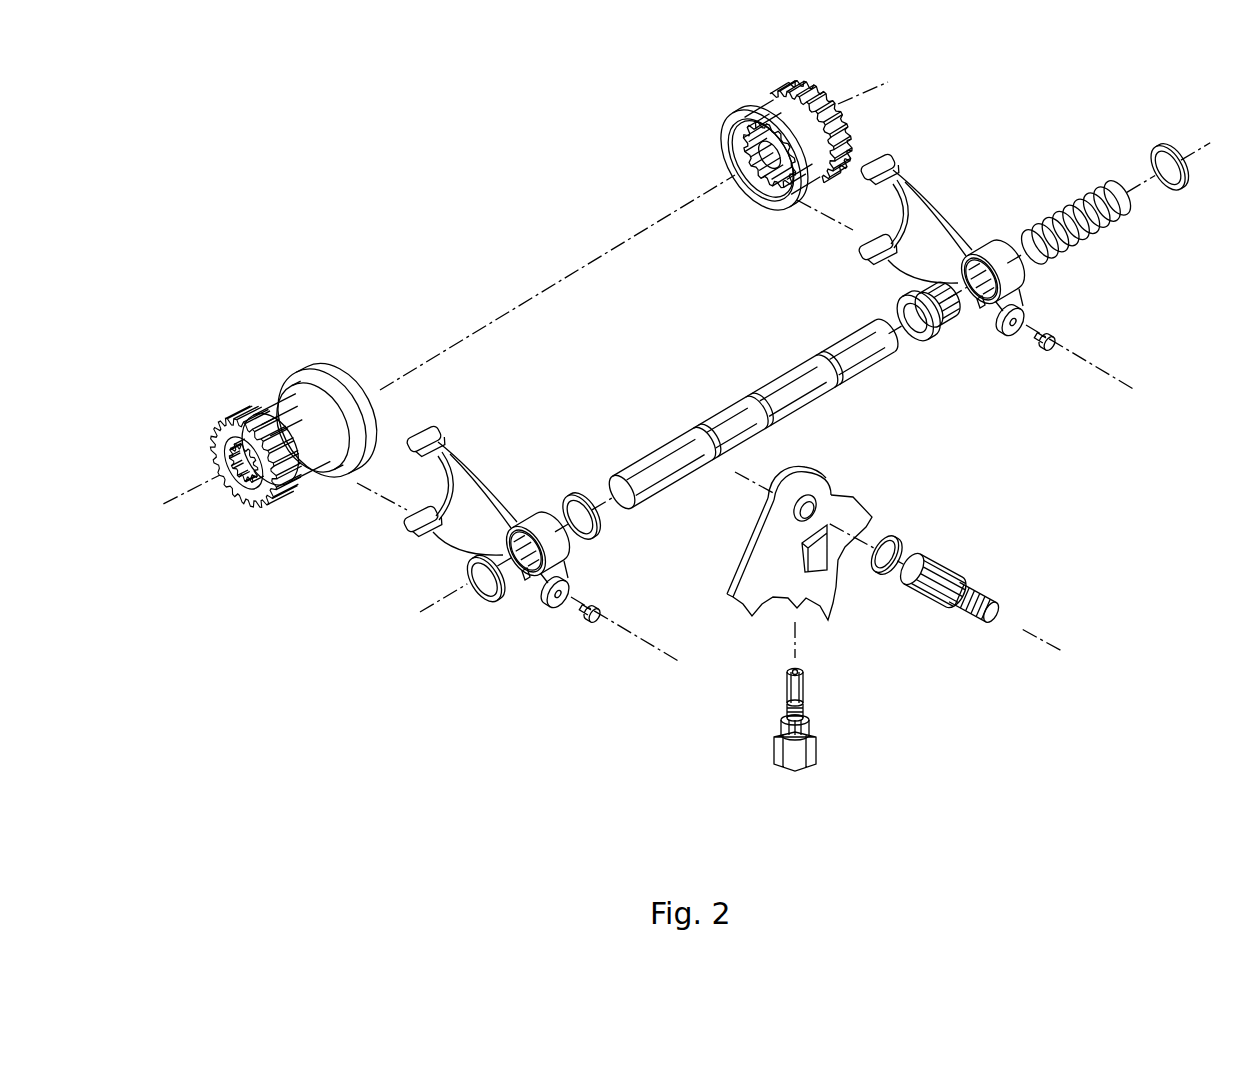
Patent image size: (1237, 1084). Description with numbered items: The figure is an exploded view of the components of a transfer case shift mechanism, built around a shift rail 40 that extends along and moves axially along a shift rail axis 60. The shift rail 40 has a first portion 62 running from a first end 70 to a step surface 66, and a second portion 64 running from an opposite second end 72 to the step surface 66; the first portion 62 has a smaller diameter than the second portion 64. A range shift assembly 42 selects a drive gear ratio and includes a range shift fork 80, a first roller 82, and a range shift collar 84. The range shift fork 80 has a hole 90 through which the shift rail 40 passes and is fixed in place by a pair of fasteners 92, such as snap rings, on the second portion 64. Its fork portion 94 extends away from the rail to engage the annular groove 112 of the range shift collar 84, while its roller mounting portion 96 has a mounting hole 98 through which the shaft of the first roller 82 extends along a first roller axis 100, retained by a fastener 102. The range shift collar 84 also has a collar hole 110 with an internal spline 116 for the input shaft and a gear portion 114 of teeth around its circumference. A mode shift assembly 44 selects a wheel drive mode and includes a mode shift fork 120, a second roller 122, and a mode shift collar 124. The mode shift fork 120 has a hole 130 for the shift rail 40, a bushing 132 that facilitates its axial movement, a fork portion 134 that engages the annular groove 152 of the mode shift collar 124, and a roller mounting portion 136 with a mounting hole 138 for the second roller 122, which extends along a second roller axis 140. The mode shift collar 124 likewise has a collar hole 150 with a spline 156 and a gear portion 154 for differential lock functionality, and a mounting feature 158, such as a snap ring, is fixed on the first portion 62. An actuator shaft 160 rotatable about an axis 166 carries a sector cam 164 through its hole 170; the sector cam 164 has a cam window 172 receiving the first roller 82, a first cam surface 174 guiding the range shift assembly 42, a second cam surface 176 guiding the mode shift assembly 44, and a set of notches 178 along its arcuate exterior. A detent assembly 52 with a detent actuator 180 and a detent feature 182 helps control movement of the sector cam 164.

The shift rail 40 is at (753, 441).
The range shift assembly 42 is at (269, 439).
The mode shift assembly 44 is at (758, 155).
The detent assembly 52 is at (806, 754).
The shift rail axis 60 is at (442, 613).
The first portion 62 is at (856, 372).
The second portion 64 is at (647, 506).
The step surface 66 is at (745, 400).
The first end 70 is at (906, 342).
The second end 72 is at (598, 500).
The range shift fork 80 is at (510, 550).
The first roller 82 is at (596, 626).
The range shift collar 84 is at (354, 387).
The hole 90 is at (529, 583).
The fasteners 92 is at (468, 572).
The fork portion 94 is at (424, 482).
The roller mounting portion 96 is at (578, 612).
The mounting hole 98 is at (586, 573).
The first roller axis 100 is at (654, 652).
The fastener 102 is at (983, 310).
The collar hole 110 is at (230, 492).
The annular groove 112 is at (325, 390).
The gear portion 114 is at (280, 502).
The spline 116 is at (215, 468).
The mode shift fork 120 is at (947, 280).
The second roller 122 is at (1050, 352).
The mode shift collar 124 is at (720, 137).
The hole 130 is at (948, 330).
The bushing 132 is at (898, 292).
The fork portion 134 is at (870, 236).
The roller mounting portion 136 is at (1032, 341).
The mounting hole 138 is at (1022, 318).
The second roller axis 140 is at (1118, 383).
The collar hole 150 is at (740, 182).
The annular groove 152 is at (800, 200).
The gear portion 154 is at (828, 106).
The spline 156 is at (727, 162).
The mounting feature 158 is at (1185, 190).
The actuator shaft 160 is at (971, 569).
The sector cam 164 is at (807, 557).
The axis 166 is at (1013, 608).
The hole 170 is at (822, 501).
The cam window 172 is at (813, 550).
The first cam surface 174 is at (770, 541).
The second cam surface 176 is at (856, 504).
The set of notches 178 is at (750, 618).
The detent actuator 180 is at (808, 683).
The detent feature 182 is at (790, 778).